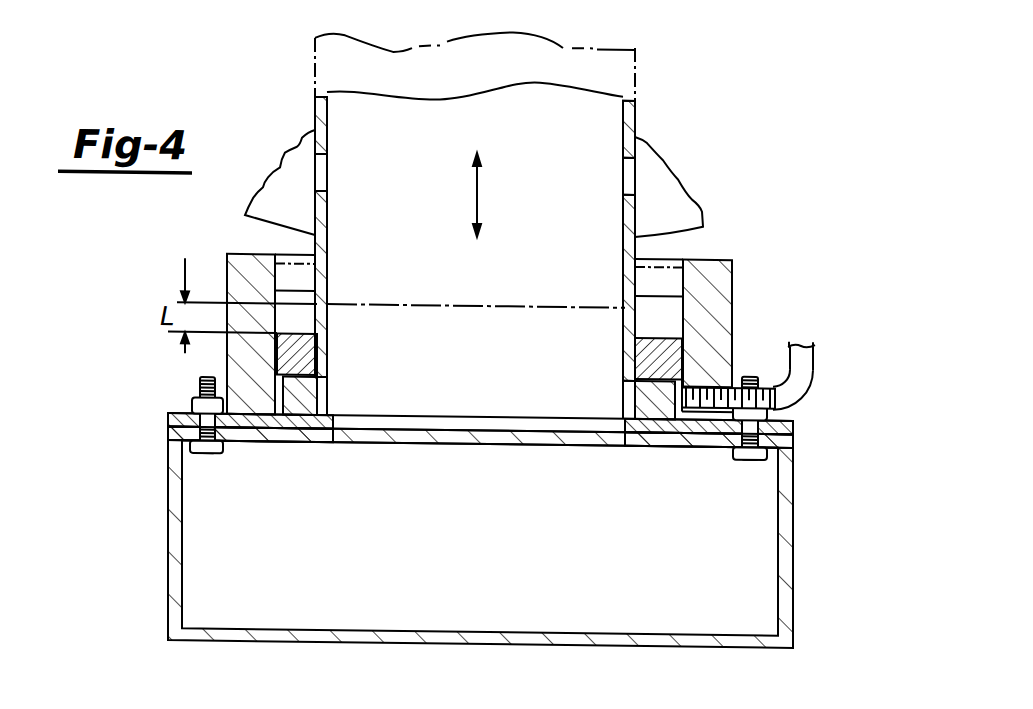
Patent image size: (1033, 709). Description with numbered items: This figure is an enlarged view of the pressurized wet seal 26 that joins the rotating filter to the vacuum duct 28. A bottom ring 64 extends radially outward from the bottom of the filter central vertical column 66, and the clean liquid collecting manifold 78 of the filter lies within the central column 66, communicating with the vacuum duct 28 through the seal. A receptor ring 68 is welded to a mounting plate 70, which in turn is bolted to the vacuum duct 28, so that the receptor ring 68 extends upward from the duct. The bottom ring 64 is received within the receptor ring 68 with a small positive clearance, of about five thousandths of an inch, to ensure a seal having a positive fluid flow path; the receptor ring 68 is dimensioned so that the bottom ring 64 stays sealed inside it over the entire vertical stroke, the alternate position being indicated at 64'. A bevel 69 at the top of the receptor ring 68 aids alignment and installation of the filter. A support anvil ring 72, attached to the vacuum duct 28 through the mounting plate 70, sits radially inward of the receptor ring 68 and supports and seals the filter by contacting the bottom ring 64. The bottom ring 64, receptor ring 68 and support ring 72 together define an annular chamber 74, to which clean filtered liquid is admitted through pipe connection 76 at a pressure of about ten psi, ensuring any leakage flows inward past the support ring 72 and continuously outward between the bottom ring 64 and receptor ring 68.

The wet seal 26 is at (722, 224).
The vacuum duct 28 is at (760, 528).
The bottom ring 64 is at (550, 333).
The bottom ring 64' is at (724, 270).
The filter central vertical column 66 is at (635, 105).
The receptor ring 68 is at (227, 254).
The bevel 69 is at (272, 282).
The mounting plate 70 is at (793, 413).
The support anvil ring 72 is at (317, 393).
The annular chamber 74 is at (670, 404).
The pipe connection 76 is at (815, 353).
The clean liquid collecting manifold 78 is at (390, 153).